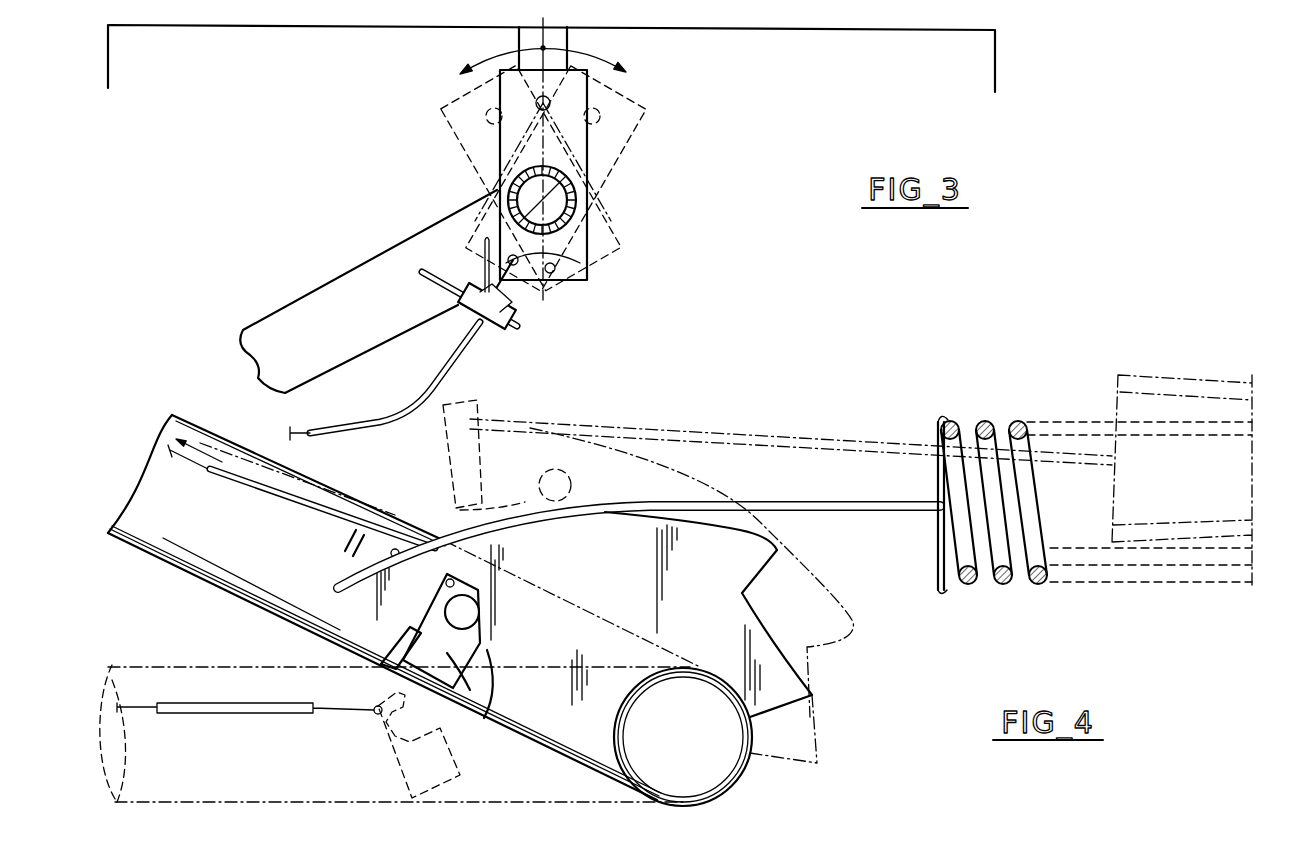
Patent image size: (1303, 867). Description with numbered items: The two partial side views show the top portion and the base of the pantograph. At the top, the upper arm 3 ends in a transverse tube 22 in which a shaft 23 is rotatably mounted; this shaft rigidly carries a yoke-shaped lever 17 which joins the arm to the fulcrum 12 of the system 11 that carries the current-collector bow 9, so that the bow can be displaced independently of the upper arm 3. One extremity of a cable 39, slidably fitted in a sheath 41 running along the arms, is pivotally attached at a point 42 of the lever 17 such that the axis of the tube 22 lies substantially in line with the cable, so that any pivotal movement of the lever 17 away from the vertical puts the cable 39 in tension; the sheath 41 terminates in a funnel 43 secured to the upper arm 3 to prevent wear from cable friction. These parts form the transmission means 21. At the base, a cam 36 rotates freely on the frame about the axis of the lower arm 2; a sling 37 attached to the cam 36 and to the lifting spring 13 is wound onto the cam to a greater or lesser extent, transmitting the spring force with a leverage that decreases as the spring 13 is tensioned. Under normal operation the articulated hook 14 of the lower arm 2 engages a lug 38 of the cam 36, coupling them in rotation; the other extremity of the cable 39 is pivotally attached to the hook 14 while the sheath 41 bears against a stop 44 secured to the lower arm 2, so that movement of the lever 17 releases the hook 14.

In FIG. 4, the lower arm 2 is at (230, 568).
In FIG. 3, the upper arm 3 is at (343, 295).
In FIG. 3, the current-collector bow 9 is at (778, 30).
In FIG. 3, the system 11 is at (557, 37).
In FIG. 3, the fulcrum 12 is at (550, 100).
In FIG. 4, the lifting spring 13 is at (985, 420).
In FIG. 4, the articulated hook 14 is at (484, 720).
In FIG. 3, the lever 17 is at (575, 137).
In FIG. 3, the transmission means 21 is at (472, 371).
In FIG. 3, the transverse tube 22 is at (588, 237).
In FIG. 3, the shaft 23 is at (566, 195).
In FIG. 4, the cam 36 is at (760, 637).
In FIG. 4, the sling 37 is at (864, 502).
In FIG. 4, the lug 38 is at (479, 612).
In FIG. 3, the cable 39 is at (510, 292).
In FIG. 4, the cable 39 is at (393, 548).
In FIG. 3, the sheath 41 is at (438, 378).
In FIG. 4, the sheath 41 is at (273, 500).
In FIG. 3, the point 42 is at (556, 268).
In FIG. 3, the funnel 43 is at (515, 318).
In FIG. 4, the stop 44 is at (362, 535).